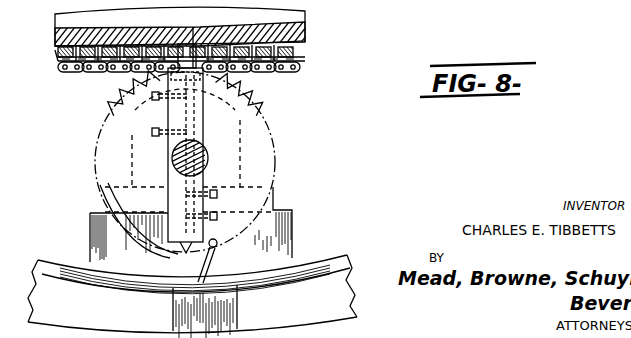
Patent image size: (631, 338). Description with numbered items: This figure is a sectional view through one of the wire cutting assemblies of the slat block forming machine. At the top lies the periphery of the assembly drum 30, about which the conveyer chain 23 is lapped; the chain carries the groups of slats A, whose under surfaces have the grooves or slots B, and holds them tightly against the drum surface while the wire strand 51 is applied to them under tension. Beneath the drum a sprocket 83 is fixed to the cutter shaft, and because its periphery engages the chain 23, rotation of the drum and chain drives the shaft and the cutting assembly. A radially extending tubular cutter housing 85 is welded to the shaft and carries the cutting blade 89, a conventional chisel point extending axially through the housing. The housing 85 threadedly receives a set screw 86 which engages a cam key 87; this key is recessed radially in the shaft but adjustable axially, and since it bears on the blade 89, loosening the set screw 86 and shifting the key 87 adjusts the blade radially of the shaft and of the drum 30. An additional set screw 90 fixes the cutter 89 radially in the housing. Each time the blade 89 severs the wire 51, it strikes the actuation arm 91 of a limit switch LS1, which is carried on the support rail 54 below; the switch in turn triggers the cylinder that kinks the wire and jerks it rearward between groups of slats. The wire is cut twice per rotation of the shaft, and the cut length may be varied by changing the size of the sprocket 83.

The assembly drum 30 is at (47, 38).
The slats A is at (148, 58).
The grooves or slots B is at (57, 53).
The cutting blade 89 is at (168, 258).
The strand of wire 51 is at (300, 52).
The conveyer chain 23 is at (302, 63).
The sprocket 83 is at (113, 99).
The set screw 90 is at (156, 98).
The tubular cutter housing 85 is at (205, 100).
The set screw 86 is at (153, 131).
The cam key 87 is at (200, 140).
The actuation arm 91 is at (219, 242).
The limit switch LS1 is at (228, 310).
The support rail 54 is at (345, 300).